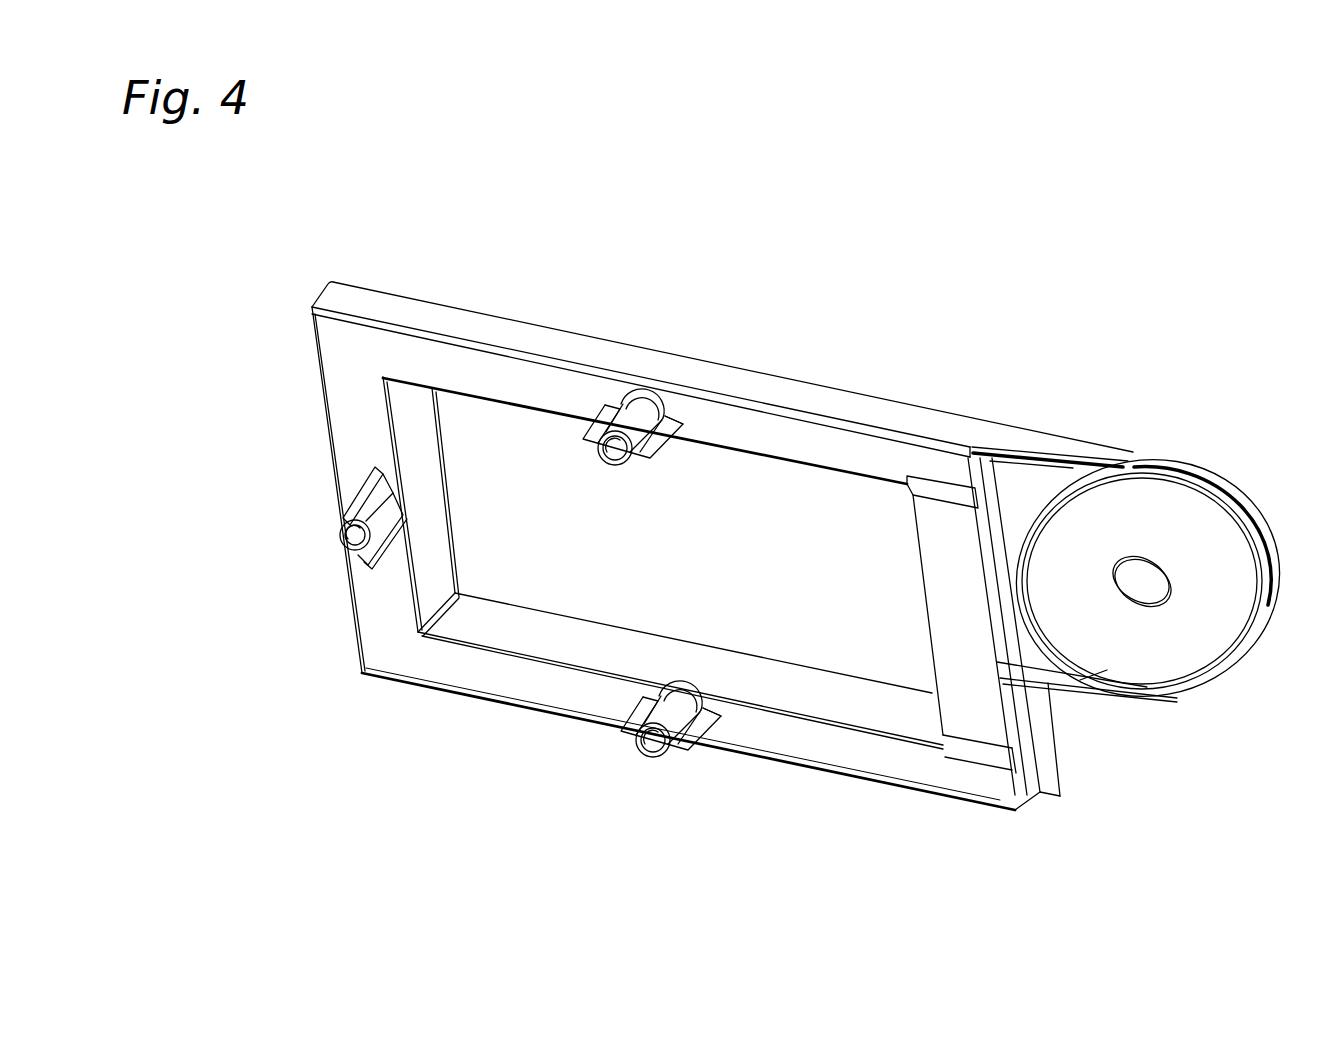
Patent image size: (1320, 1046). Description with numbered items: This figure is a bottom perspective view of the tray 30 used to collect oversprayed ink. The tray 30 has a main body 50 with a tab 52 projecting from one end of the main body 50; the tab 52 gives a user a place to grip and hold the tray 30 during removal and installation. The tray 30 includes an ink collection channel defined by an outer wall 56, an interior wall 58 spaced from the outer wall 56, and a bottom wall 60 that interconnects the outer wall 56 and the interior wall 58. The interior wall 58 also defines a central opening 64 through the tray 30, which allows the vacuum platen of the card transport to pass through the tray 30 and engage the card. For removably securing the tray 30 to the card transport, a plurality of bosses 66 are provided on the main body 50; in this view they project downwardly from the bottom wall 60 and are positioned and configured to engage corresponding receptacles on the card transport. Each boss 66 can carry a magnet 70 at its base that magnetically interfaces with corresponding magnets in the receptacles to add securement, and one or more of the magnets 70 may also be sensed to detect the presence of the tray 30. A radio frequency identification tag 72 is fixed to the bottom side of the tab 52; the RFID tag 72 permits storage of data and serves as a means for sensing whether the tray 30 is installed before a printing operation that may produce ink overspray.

The tray 30 is at (878, 333).
The main body 50 is at (487, 703).
The tab 52 is at (1160, 447).
The outer wall 56 is at (525, 335).
The interior wall 58 is at (596, 642).
The bottom wall 60 is at (813, 743).
The central opening 64 is at (890, 638).
The bosses 66 is at (630, 418).
The magnet 70 is at (617, 457).
The radio frequency identification (RFID) tag 72 is at (1162, 660).